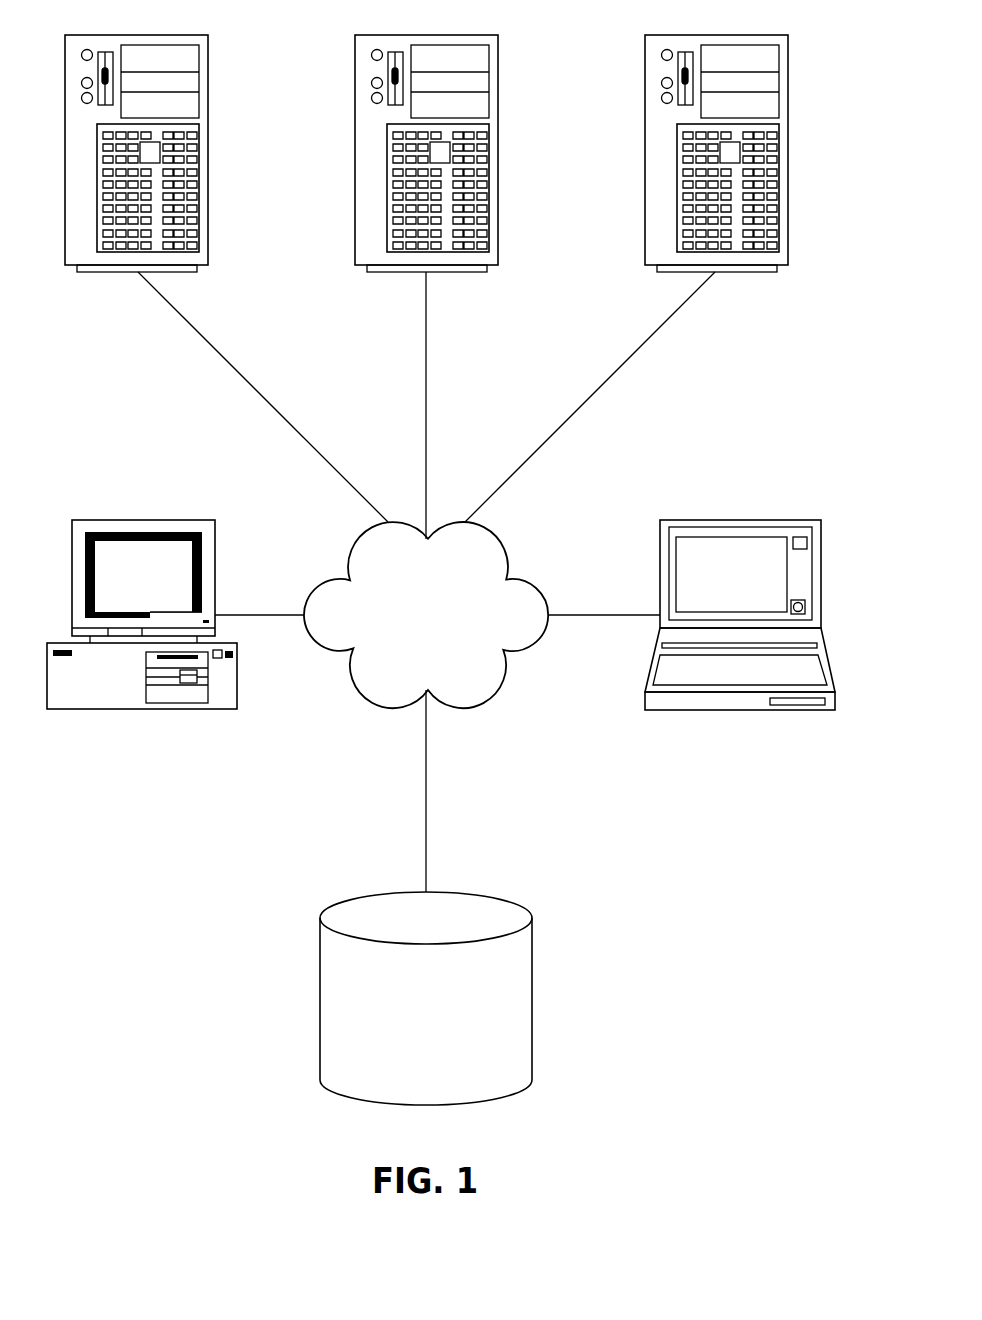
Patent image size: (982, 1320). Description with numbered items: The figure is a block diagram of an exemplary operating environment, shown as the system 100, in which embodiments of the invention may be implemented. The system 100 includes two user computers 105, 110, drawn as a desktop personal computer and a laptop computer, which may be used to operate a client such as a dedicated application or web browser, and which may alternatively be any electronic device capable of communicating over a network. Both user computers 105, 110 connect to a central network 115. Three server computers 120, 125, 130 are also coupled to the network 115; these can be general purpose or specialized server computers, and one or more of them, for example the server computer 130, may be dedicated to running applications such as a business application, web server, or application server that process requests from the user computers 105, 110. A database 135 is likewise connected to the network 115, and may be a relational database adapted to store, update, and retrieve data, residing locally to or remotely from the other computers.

The system 100 is at (243, 843).
The user computer 105 is at (222, 710).
The user computer 110 is at (783, 712).
The network 115 is at (500, 690).
The server computer 120 is at (183, 273).
The server computer 125 is at (473, 273).
The server computer 130 is at (763, 273).
The database 135 is at (498, 1097).